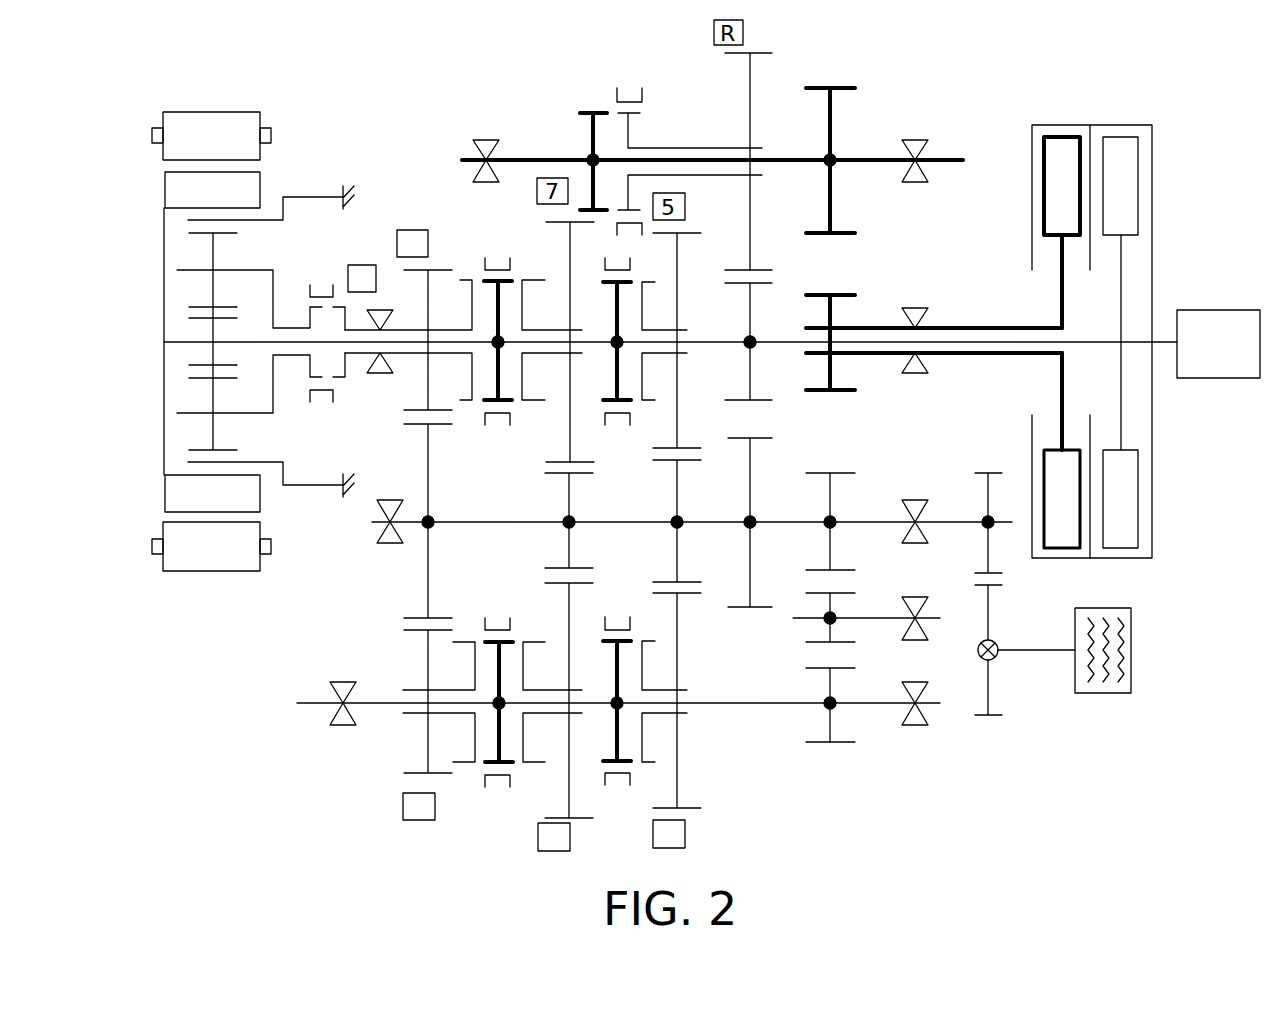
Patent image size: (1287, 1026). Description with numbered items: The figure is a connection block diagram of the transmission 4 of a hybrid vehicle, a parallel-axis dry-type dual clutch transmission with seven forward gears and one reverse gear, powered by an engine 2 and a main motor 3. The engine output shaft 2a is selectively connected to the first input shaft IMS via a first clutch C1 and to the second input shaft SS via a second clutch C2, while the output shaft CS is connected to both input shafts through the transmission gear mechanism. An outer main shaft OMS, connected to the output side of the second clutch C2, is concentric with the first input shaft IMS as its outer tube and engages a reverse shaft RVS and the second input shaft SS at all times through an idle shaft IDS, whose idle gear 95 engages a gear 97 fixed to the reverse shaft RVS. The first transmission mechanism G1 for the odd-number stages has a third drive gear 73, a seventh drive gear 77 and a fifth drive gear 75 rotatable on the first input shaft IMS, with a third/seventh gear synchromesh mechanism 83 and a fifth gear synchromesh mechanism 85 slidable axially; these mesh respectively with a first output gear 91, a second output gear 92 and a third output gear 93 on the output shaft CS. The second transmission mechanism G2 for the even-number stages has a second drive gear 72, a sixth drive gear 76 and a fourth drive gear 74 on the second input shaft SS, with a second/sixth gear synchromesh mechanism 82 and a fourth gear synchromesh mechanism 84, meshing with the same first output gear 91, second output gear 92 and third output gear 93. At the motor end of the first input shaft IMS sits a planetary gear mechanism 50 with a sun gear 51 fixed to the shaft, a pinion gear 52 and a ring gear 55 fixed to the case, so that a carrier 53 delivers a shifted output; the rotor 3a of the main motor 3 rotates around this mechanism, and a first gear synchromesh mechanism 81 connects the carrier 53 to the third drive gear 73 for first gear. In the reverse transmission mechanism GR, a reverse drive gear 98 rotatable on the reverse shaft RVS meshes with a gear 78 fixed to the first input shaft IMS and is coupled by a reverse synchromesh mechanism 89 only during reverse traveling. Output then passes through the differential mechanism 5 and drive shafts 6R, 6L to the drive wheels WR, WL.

The engine 2 is at (1220, 317).
The engine output shaft 2a is at (1162, 355).
The main motor 3 is at (232, 100).
The rotor 3a is at (178, 187).
The transmission 4 is at (948, 93).
The differential mechanism 5 is at (998, 655).
The left drive shaft 6L is at (1047, 612).
The right drive shaft 6R is at (1033, 648).
The left drive wheel WL is at (1119, 684).
The right drive wheel WR is at (1118, 687).
The planetary gear mechanism 50 is at (292, 415).
The sun gear 51 is at (212, 321).
The pinion gear 52 is at (212, 262).
The carrier 53 is at (273, 273).
The ring gear 55 is at (255, 219).
The second drive gear 72 is at (445, 777).
The third drive gear 73 is at (432, 270).
The fourth drive gear 74 is at (690, 813).
The fifth drive gear 75 is at (687, 233).
The sixth drive gear 76 is at (580, 822).
The seventh drive gear 77 is at (545, 220).
The gear 78 is at (748, 323).
The first gear synchromesh mechanism 81 is at (310, 292).
The second/sixth gear synchromesh mechanism 82 is at (497, 623).
The third/seventh gear synchromesh mechanism 83 is at (508, 268).
The fourth gear synchromesh mechanism 84 is at (608, 623).
The fifth gear synchromesh mechanism 85 is at (630, 267).
The reverse synchromesh mechanism 89 is at (628, 97).
The first output gear 91 is at (437, 430).
The second output gear 92 is at (580, 473).
The third output gear 93 is at (675, 480).
The idle gear 95 is at (850, 642).
The gear 97 is at (837, 87).
The reverse drive gear 98 is at (748, 118).
The first clutch C1 is at (1128, 160).
The second clutch C2 is at (1070, 157).
The first input shaft IMS is at (765, 347).
The outer main shaft OMS is at (997, 297).
The output shaft CS is at (775, 520).
The second input shaft SS is at (738, 700).
The idle shaft IDS is at (927, 613).
The reverse shaft RVS is at (847, 157).
The reverse transmission mechanism GR is at (518, 98).
The first transmission mechanism G1 is at (432, 190).
The second transmission mechanism G2 is at (378, 660).